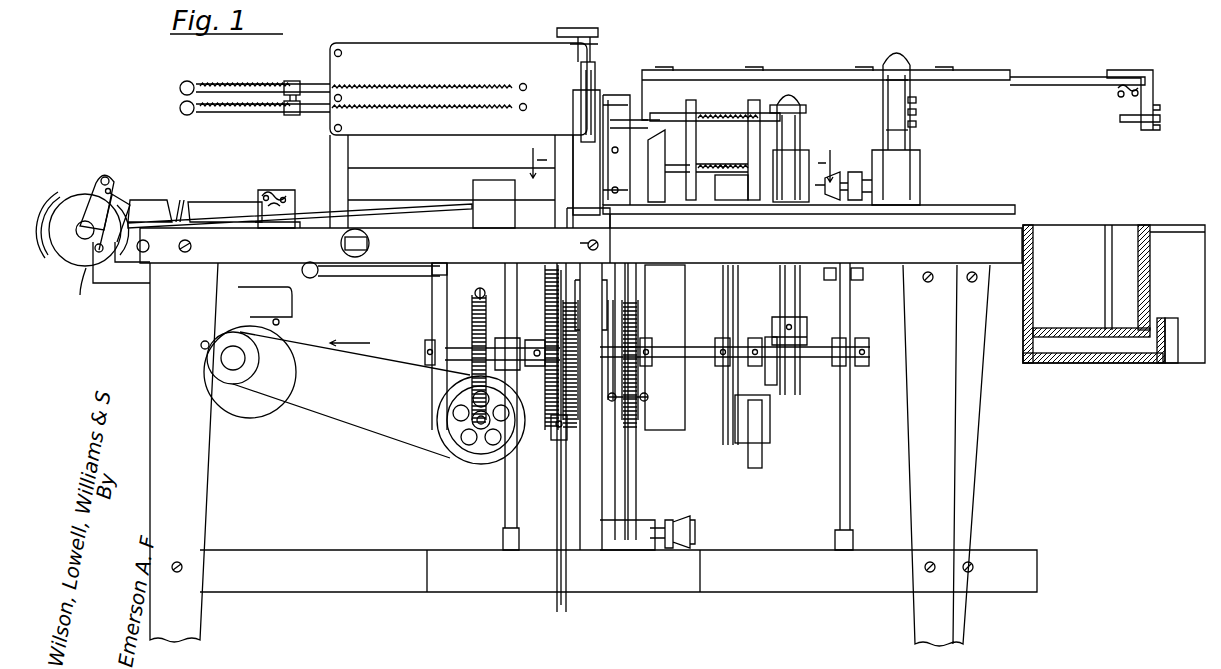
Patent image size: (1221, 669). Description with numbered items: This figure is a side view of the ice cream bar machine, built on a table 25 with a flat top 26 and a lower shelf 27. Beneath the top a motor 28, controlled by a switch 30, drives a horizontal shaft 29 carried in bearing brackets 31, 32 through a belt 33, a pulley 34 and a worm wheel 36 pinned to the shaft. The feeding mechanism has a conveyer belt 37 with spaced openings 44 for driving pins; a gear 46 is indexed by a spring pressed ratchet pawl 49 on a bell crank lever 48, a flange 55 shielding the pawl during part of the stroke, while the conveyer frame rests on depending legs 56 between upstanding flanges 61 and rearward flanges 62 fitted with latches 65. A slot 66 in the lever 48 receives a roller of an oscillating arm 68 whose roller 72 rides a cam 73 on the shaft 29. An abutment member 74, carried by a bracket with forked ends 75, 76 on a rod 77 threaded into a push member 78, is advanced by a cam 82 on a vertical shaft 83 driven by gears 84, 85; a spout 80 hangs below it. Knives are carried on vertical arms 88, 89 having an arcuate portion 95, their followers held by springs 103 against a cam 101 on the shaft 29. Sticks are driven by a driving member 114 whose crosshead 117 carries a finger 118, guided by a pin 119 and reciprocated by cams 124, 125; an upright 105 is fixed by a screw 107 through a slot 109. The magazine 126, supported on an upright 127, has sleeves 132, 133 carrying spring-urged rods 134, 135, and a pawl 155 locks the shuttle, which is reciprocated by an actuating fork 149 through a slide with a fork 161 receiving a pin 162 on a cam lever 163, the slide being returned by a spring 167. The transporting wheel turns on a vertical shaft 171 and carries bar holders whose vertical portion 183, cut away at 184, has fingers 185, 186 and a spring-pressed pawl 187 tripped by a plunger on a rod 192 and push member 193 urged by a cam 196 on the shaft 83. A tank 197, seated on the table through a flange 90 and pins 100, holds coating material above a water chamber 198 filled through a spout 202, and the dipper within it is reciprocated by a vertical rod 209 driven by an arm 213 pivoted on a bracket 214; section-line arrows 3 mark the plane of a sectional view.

The section line 3 is at (682, 164).
The table 25 is at (978, 407).
The table top 26 is at (809, 229).
The shelf 27 is at (618, 571).
The motor 28 is at (250, 352).
The shaft 29 is at (703, 347).
The switch 30 is at (371, 243).
The bearing bracket 31 is at (508, 484).
The bearing bracket 32 is at (850, 450).
The belt 33 is at (360, 429).
The pulley 34 is at (465, 456).
The worm wheel 36 is at (480, 288).
The conveyer belt 37 is at (581, 245).
The spaced openings 44 is at (230, 202).
The gear 46 is at (75, 258).
The bell crank lever 48 is at (97, 183).
The ratchet pawl 49 is at (120, 198).
The flange 55 is at (72, 193).
The depending legs 56 is at (183, 199).
The upstanding flanges 61 is at (494, 204).
The flanges 62 is at (297, 215).
The latches 65 is at (276, 209).
The slot 66 is at (95, 281).
The oscillating arm 68 is at (352, 271).
The roller 72 is at (437, 276).
The cam 73 is at (440, 319).
The abutment member 74 is at (661, 162).
The forked end 75 is at (697, 141).
The forked end 76 is at (758, 96).
The rod 77 is at (672, 173).
The push member 78 is at (745, 171).
The spout 80 is at (665, 347).
The cam 82 is at (791, 176).
The vertical shaft 83 is at (802, 136).
The gear 84 is at (805, 323).
The gear 85 is at (778, 379).
The arm 88 is at (616, 172).
The arm 89 is at (638, 491).
The flange 90 is at (1028, 225).
The arcuate portion 95 is at (634, 316).
The pins 100 is at (1052, 224).
The cam 101 is at (641, 331).
The springs 103 is at (630, 403).
The upright 105 is at (588, 152).
The screw 107 is at (612, 242).
The slot 109 is at (588, 229).
The driving member 114 is at (556, 433).
The crosshead 117 is at (566, 46).
The finger 118 is at (596, 29).
The pin 119 is at (558, 479).
The cam 124 is at (566, 398).
The cam 125 is at (548, 318).
The magazine 126 is at (458, 89).
The upright 127 is at (350, 155).
The sleeve 132 is at (301, 115).
The sleeve 133 is at (302, 81).
The rod 134 is at (243, 113).
The rod 135 is at (234, 84).
The actuating fork 149 is at (616, 96).
The pawl 155 is at (580, 68).
The fork 161 is at (1116, 96).
The pin 162 is at (1128, 72).
The cam lever 163 is at (605, 450).
The spring 167 is at (1016, 77).
The shaft 171 is at (915, 149).
The vertically disposed portion 183 is at (882, 106).
The cut away 184 is at (917, 102).
The finger 185 is at (917, 113).
The finger 186 is at (917, 127).
The pawl 187 is at (882, 120).
The rod 192 is at (676, 112).
The push member 193 is at (739, 113).
The cam 196 is at (805, 110).
The tank 197 is at (1145, 277).
The water chamber 198 is at (1110, 362).
The spout 202 is at (1176, 330).
The rod 209 is at (764, 451).
The arm 213 is at (735, 416).
The bracket 214 is at (748, 268).